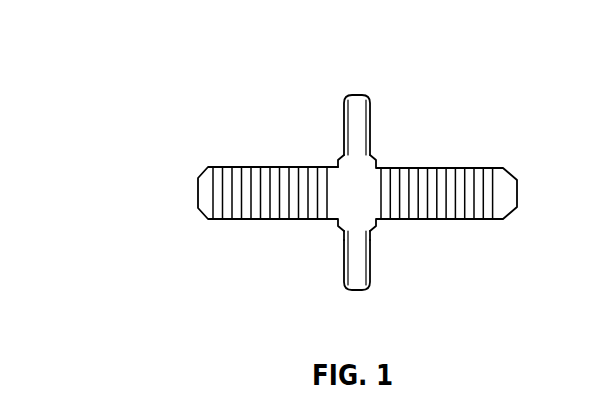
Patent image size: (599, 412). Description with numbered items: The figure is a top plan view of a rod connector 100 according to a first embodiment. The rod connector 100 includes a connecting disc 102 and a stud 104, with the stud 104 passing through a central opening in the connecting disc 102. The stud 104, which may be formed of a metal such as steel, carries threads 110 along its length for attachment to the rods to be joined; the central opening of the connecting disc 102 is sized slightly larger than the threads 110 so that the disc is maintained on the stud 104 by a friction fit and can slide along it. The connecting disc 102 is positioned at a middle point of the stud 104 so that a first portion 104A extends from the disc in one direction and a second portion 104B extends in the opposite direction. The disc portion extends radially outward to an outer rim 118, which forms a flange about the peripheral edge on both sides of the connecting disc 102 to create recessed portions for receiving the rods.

The rod connector 100 is at (88, 97).
The connecting disc 102 is at (362, 90).
The stud 104 is at (210, 195).
The first portion of the stud 104A is at (242, 178).
The second portion of the stud 104B is at (467, 172).
The threads 110 is at (260, 203).
The outer rim 118 is at (357, 278).